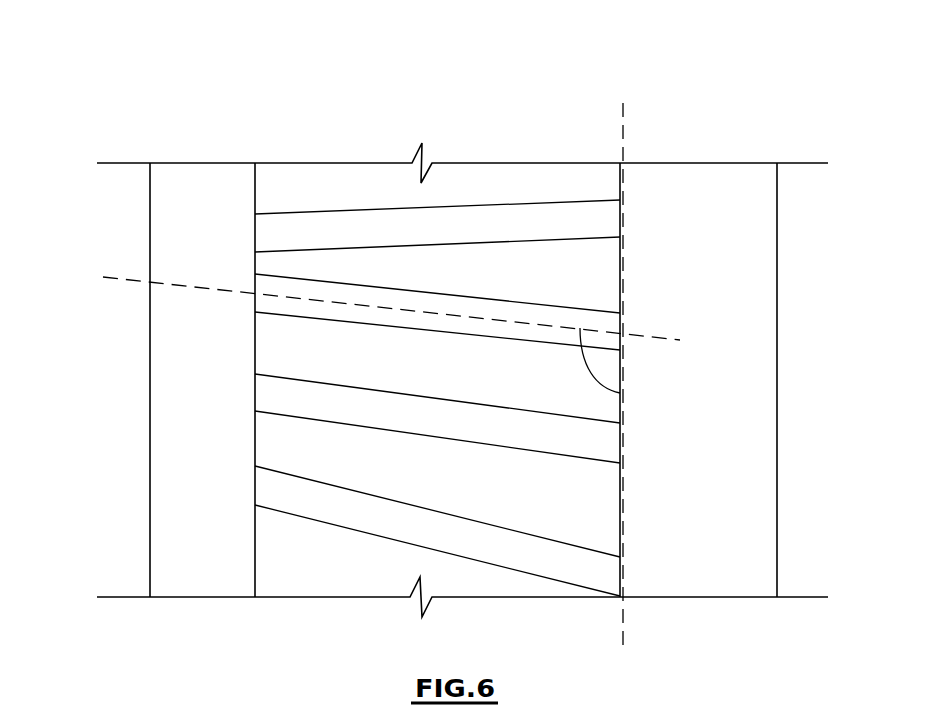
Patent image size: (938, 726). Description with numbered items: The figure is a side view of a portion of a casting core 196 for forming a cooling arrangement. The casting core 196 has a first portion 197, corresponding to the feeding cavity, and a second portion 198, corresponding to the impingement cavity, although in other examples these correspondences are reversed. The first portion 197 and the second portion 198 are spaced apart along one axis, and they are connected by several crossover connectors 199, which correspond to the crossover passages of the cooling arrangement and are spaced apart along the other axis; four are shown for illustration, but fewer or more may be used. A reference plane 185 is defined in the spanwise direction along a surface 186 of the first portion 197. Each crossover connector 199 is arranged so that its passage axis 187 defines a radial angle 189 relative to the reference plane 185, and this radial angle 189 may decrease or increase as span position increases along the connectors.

The casting core 196 is at (108, 84).
The second portion 198 is at (150, 211).
The first portion 197 is at (777, 211).
The surface 186 is at (618, 178).
The reference plane 185 is at (623, 118).
The crossover connectors 199 is at (294, 213).
The passage axis 187 is at (103, 277).
The radial angle 189 is at (578, 355).